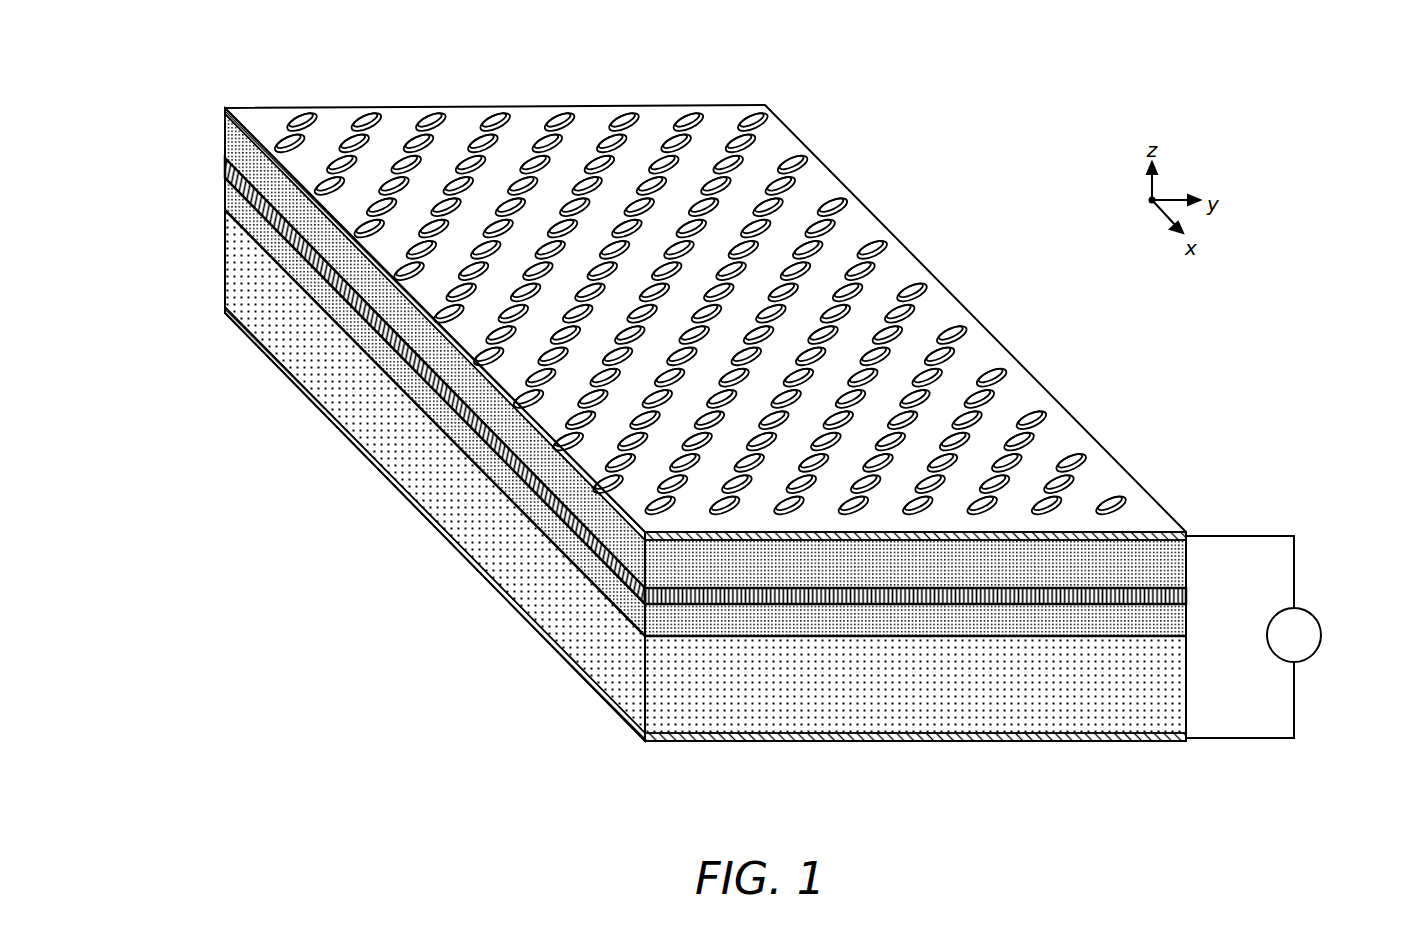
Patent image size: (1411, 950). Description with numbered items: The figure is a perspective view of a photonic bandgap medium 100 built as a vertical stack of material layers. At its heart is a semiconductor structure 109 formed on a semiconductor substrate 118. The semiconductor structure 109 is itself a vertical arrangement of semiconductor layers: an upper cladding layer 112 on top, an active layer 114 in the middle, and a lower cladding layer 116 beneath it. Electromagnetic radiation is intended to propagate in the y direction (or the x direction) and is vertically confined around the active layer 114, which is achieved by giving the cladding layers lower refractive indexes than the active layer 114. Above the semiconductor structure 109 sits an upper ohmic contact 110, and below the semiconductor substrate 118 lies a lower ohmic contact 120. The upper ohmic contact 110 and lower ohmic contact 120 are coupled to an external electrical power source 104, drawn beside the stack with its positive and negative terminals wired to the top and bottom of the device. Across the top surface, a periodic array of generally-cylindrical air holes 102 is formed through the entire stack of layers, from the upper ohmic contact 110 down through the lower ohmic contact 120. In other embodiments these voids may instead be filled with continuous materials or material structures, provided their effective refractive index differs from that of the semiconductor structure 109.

The photonic bandgap medium 100 is at (917, 128).
The air holes 102 is at (426, 113).
The external electrical power source 104 is at (1321, 635).
The semiconductor structure 109 is at (620, 373).
The upper ohmic contact 110 is at (222, 106).
The upper cladding layer 112 is at (222, 135).
The active layer 114 is at (222, 165).
The lower cladding layer 116 is at (663, 407).
The semiconductor substrate 118 is at (222, 262).
The lower ohmic contact 120 is at (222, 308).